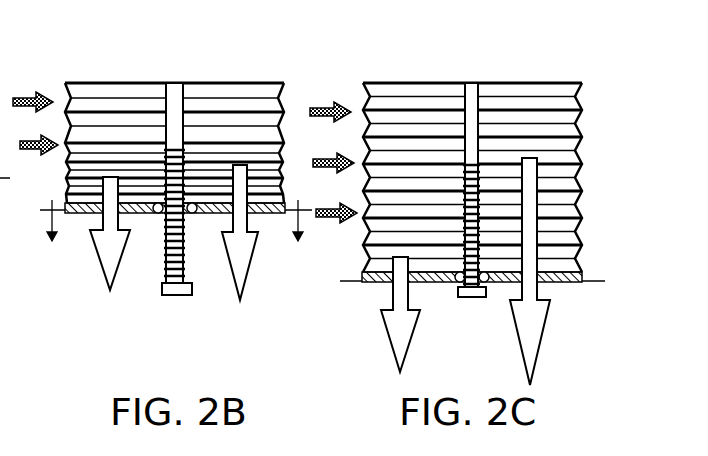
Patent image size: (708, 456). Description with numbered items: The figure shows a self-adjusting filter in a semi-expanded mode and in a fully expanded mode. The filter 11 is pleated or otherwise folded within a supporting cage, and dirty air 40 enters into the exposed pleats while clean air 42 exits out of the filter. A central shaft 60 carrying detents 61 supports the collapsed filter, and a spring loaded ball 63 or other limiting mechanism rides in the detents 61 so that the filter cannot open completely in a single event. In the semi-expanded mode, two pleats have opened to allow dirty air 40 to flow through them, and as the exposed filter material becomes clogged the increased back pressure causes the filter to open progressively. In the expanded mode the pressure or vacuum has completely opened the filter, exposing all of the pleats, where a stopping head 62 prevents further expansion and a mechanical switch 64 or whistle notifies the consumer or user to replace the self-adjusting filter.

In FIG. 2C, the filter 11 is at (363, 100).
In FIG. 2B, the dirty air 40 is at (40, 92).
In FIG. 2C, the dirty air 40 is at (323, 105).
In FIG. 2B, the clean air 42 is at (100, 258).
In FIG. 2C, the clean air 42 is at (393, 342).
In FIG. 2B, the central shaft 60 is at (168, 104).
In FIG. 2C, the central shaft 60 is at (464, 100).
In FIG. 2B, the detents 61 is at (184, 262).
In FIG. 2C, the stopping head 62 is at (474, 298).
In FIG. 2B, the spring loaded ball 63 is at (157, 214).
In FIG. 2C, the mechanical switch 64 is at (486, 283).